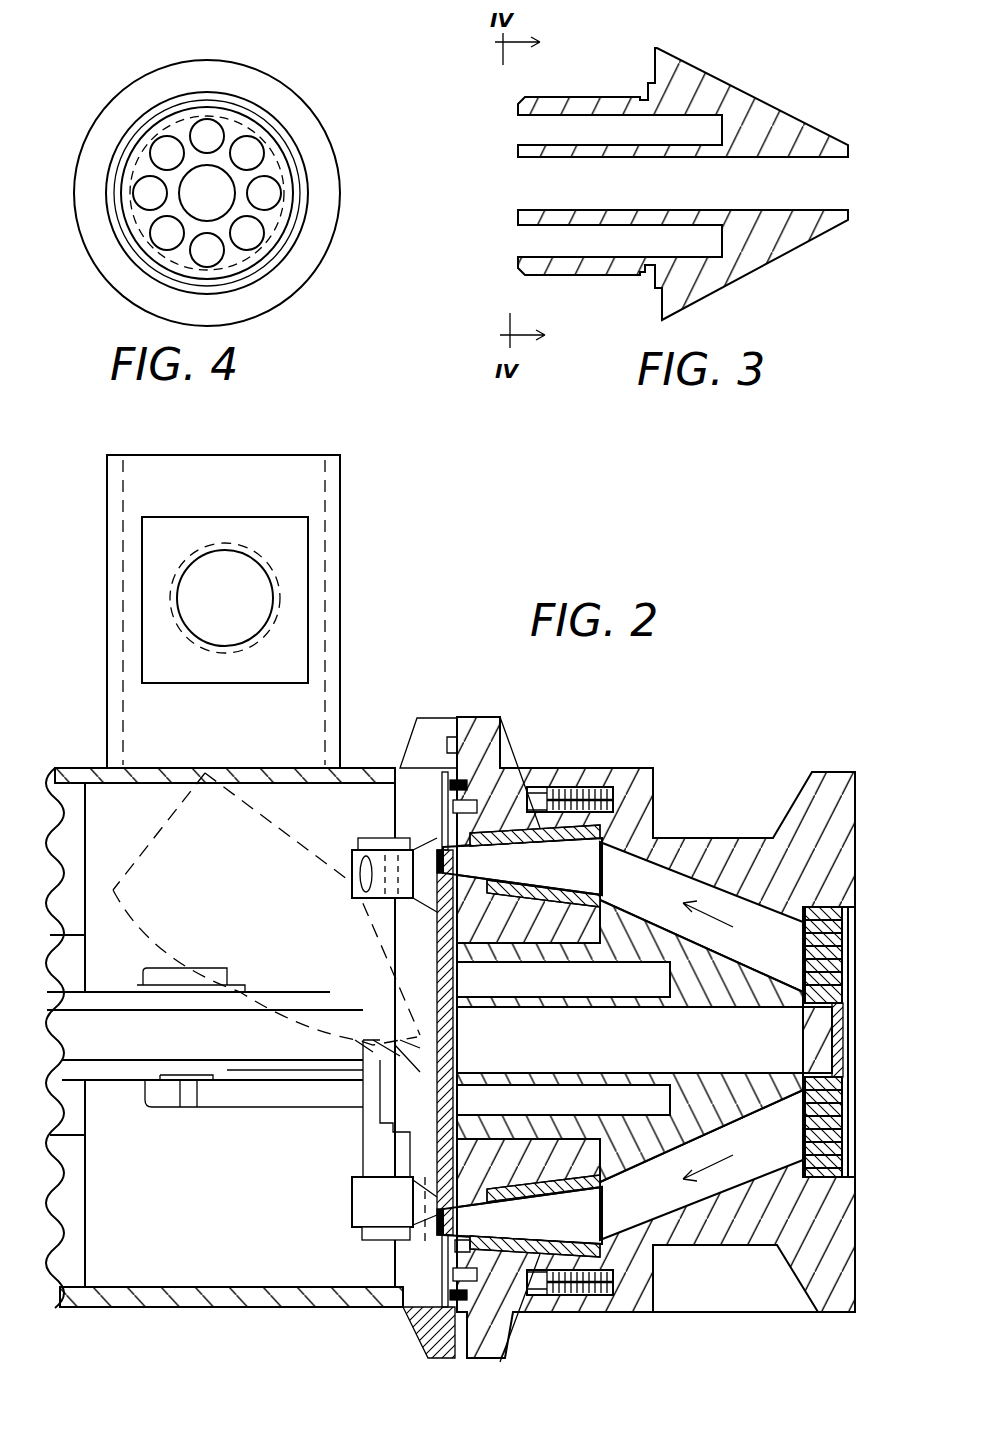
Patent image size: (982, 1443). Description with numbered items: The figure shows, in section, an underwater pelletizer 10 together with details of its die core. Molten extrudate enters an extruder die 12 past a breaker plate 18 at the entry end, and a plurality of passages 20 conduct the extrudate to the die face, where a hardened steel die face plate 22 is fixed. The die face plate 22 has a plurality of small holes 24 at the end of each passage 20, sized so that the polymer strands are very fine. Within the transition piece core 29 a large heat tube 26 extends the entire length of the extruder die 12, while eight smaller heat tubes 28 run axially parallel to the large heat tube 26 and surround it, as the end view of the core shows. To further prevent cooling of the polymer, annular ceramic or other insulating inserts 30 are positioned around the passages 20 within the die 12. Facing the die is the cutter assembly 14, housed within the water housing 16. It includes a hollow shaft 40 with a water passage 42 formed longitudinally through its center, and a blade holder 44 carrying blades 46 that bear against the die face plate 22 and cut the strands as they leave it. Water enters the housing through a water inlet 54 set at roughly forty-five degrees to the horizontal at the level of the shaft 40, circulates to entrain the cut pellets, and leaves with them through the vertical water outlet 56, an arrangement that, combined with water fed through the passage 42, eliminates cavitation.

In FIG. 2, the underwater pelletizer 10 is at (453, 646).
In FIG. 2, the extruder die 12 is at (719, 774).
In FIG. 2, the cutter assembly 14 is at (241, 1145).
In FIG. 2, the water housing 16 is at (370, 703).
In FIG. 2, the breaker plate 18 is at (843, 947).
In FIG. 2, the passages 20 is at (522, 857).
In FIG. 2, the die face plate 22 is at (438, 852).
In FIG. 2, the holes 24 is at (458, 1247).
In FIG. 4, the large heat tube 26 is at (190, 182).
In FIG. 3, the large heat tube 26 is at (790, 165).
In FIG. 2, the large heat tube 26 is at (817, 1020).
In FIG. 4, the smaller heat tubes 28 is at (163, 239).
In FIG. 3, the smaller heat tubes 28 is at (600, 126).
In FIG. 2, the smaller heat tubes 28 is at (625, 975).
In FIG. 4, the transition piece core 29 is at (322, 146).
In FIG. 3, the transition piece core 29 is at (768, 238).
In FIG. 2, the transition piece core 29 is at (727, 978).
In FIG. 2, the annular ceramic inserts 30 is at (500, 833).
In FIG. 2, the hollow shaft 40 is at (122, 1082).
In FIG. 2, the water passage 42 is at (166, 1050).
In FIG. 2, the blade holder 44 is at (372, 1142).
In FIG. 2, the blades 46 is at (423, 868).
In FIG. 2, the water inlet 54 is at (150, 917).
In FIG. 2, the water outlet 56 is at (340, 478).